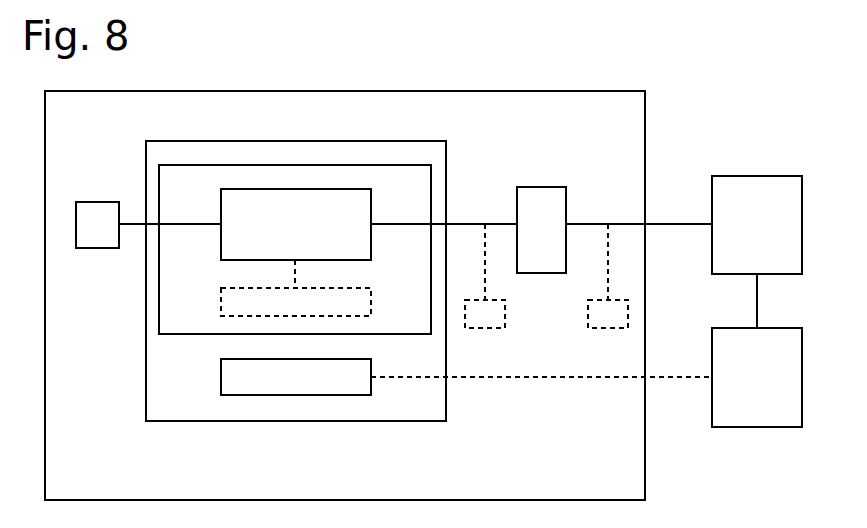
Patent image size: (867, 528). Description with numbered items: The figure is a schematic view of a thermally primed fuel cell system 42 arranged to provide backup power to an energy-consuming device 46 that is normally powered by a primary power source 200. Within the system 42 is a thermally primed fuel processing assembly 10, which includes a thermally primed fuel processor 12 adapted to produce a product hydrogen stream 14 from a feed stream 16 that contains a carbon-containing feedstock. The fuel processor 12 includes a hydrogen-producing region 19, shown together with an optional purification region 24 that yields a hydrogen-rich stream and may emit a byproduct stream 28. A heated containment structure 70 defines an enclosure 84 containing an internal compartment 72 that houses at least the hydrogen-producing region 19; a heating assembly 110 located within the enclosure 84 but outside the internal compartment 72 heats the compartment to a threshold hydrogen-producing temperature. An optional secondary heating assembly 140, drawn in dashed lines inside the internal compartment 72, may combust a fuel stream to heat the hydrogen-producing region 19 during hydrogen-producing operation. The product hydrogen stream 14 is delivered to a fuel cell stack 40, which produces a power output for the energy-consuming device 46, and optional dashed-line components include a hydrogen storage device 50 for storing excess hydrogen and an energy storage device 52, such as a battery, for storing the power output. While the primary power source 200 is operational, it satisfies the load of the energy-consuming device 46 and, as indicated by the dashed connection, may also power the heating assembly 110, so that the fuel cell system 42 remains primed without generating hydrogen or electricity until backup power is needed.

The thermally primed fuel processing assembly 10 is at (93, 151).
The thermally primed fuel processor 12 is at (131, 153).
The product hydrogen stream 14 is at (463, 222).
The feed stream 16 is at (137, 222).
The hydrogen-producing region 19 is at (280, 189).
The purification region 24 is at (97, 250).
The byproduct stream 28 is at (295, 276).
The fuel cell stack 40 is at (538, 185).
The thermally primed fuel cell system 42 is at (555, 89).
The energy-consuming device 46 is at (758, 176).
The hydrogen storage device 50 is at (479, 330).
The energy storage device 52 is at (599, 330).
The heated containment structure 70 is at (172, 436).
The internal compartment 72 is at (183, 316).
The enclosure 84 is at (410, 423).
The heating assembly 110 is at (315, 398).
The heating assembly 140 is at (217, 297).
The primary power source 200 is at (765, 328).